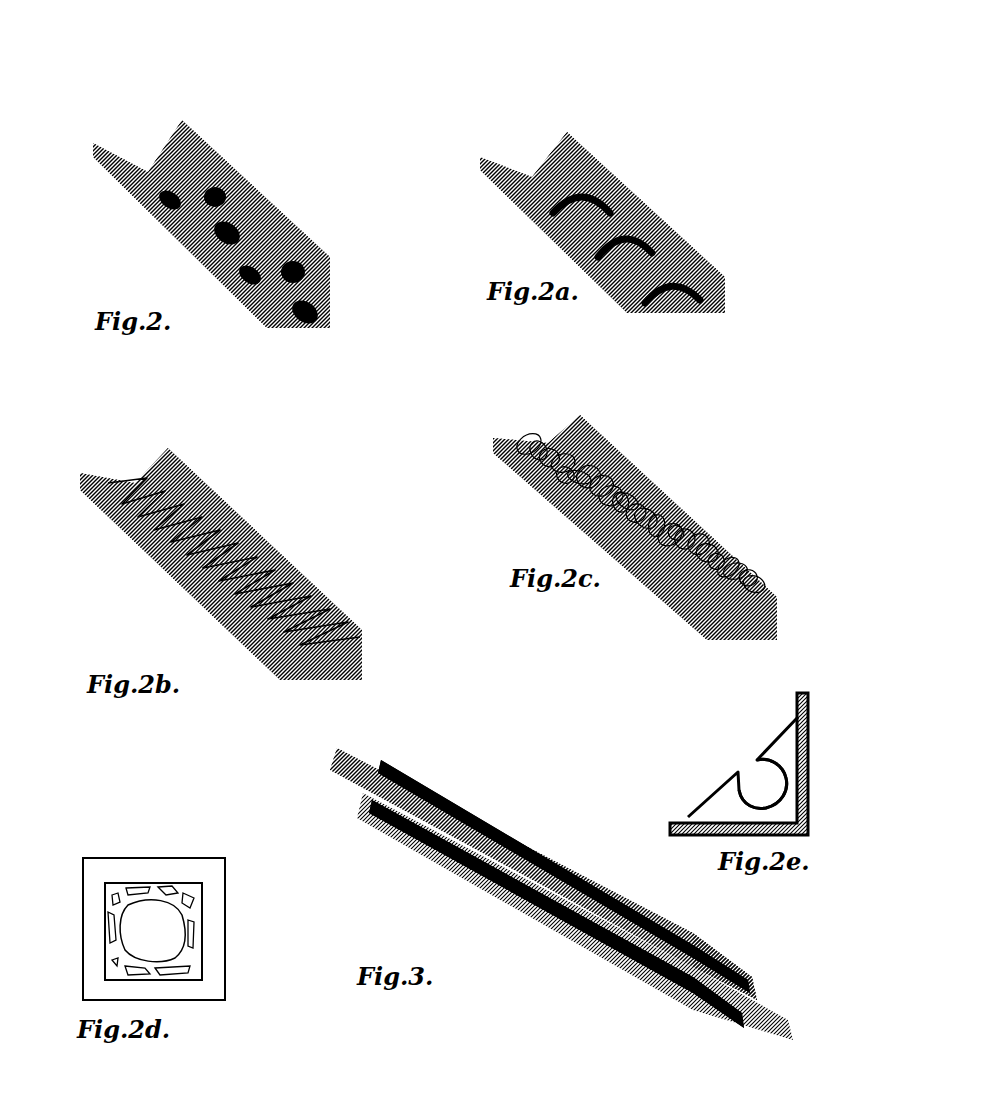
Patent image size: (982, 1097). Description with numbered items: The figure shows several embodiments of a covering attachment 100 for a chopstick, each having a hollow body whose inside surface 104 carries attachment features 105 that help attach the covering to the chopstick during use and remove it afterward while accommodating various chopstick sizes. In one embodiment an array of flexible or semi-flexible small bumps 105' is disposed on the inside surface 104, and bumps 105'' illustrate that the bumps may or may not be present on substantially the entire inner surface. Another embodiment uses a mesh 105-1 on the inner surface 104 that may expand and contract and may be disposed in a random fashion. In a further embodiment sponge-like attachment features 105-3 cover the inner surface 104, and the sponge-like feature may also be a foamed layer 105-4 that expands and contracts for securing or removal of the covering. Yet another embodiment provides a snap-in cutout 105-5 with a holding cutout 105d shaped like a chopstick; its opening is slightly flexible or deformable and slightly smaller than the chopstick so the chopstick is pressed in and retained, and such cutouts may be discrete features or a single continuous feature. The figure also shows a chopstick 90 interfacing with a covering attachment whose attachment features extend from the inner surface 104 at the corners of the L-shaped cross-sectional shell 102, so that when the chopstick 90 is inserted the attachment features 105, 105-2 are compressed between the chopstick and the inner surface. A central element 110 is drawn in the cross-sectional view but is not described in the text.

In FIG. 2, the covering attachment 100 is at (143, 106).
In FIG. 2A, the covering attachment 100 is at (553, 116).
In FIG. 2B, the covering attachment 100 is at (124, 443).
In FIG. 2C, the covering attachment 100 is at (536, 413).
In FIG. 2D, the covering attachment 100 is at (95, 846).
In FIG. 2E, the covering attachment 100 is at (683, 822).
In FIG. 3, the covering attachment 100 is at (612, 864).
In FIG. 2, the inside surface 104 is at (197, 167).
In FIG. 2A, the inside surface 104 is at (588, 168).
In FIG. 2B, the inside surface 104 is at (195, 480).
In FIG. 2C, the inside surface 104 is at (603, 448).
In FIG. 2D, the inside surface 104 is at (107, 875).
In FIG. 2, the bumps 105' is at (187, 225).
In FIG. 2A, the bumps 105'' is at (661, 235).
In FIG. 2B, the mesh 105-1 is at (283, 583).
In FIG. 2C, the sponge-like attachment features 105-3 is at (700, 550).
In FIG. 2D, the foamed layer 105-4 is at (173, 970).
In FIG. 2E, the snap-in cutout 105-5 is at (768, 714).
In FIG. 2E, the holding cutout 105d is at (760, 775).
In FIG. 3, the attachment features 105-2 is at (420, 781).
In FIG. 3, the attachment features 105 is at (559, 894).
In FIG. 2D, the central body 110 is at (155, 940).
In FIG. 3, the chopstick 90 is at (353, 772).
In FIG. 3, the L-shaped cross-sectional shell 102 is at (760, 997).